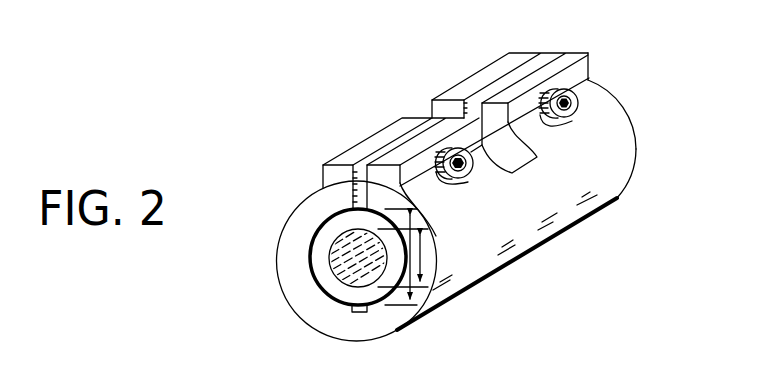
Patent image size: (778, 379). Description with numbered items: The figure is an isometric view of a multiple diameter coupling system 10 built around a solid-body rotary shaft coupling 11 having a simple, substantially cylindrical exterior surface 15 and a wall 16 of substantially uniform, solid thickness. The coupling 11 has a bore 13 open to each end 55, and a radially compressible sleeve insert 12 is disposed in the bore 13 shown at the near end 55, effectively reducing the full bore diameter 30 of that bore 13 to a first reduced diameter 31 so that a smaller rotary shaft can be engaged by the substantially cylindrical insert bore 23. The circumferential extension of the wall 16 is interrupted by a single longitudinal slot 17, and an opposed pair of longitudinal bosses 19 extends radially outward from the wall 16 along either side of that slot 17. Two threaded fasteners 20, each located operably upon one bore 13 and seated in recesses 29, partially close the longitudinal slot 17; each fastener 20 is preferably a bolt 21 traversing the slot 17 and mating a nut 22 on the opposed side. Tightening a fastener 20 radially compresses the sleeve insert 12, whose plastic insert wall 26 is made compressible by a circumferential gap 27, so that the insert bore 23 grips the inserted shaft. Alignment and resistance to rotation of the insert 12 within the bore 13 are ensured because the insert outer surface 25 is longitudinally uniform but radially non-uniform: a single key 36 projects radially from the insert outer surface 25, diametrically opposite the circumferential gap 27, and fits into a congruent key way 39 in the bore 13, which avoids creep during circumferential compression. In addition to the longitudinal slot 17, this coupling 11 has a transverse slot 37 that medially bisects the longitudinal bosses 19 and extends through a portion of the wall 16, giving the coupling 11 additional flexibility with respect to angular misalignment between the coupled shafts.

The coupling system 10 is at (243, 123).
The coupling 11 is at (507, 261).
The sleeve insert 12 is at (317, 267).
The bore 13 is at (310, 283).
The exterior surface 15 is at (607, 184).
The wall 16 is at (365, 333).
The longitudinal slot 17 is at (553, 48).
The bosses 19 is at (496, 72).
The threaded fastener 20 is at (361, 132).
The bolt 21 is at (590, 68).
The nut 22 is at (446, 80).
The insert bore 23 is at (330, 300).
The insert outer surface 25 is at (310, 243).
The insert wall 26 is at (327, 184).
The circumferential gap 27 is at (320, 188).
The recesses 29 is at (557, 128).
The full bore diameter 30 is at (430, 219).
The first reduced diameter 31 is at (443, 258).
The key 36 is at (368, 314).
The transverse slot 37 is at (427, 110).
The key way 39 is at (359, 313).
The end 55 is at (632, 113).